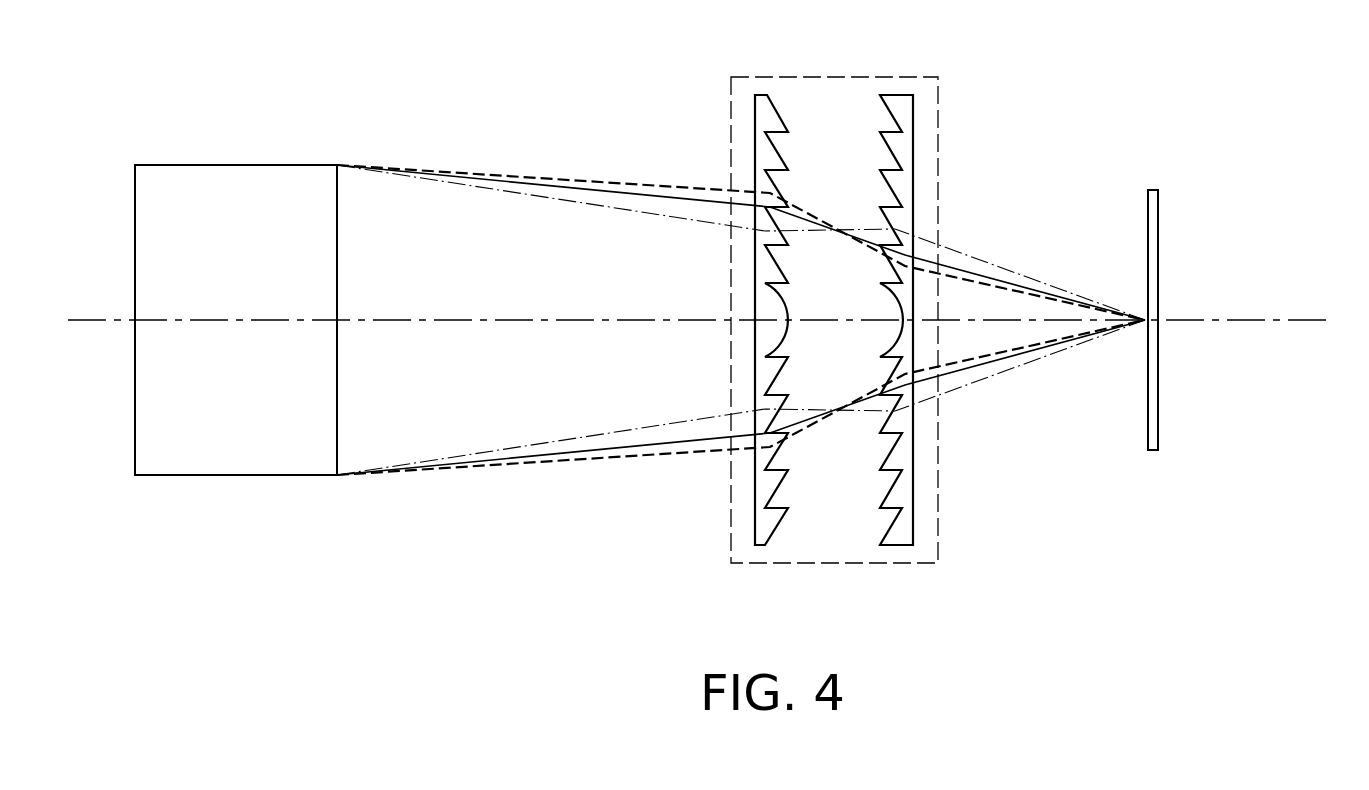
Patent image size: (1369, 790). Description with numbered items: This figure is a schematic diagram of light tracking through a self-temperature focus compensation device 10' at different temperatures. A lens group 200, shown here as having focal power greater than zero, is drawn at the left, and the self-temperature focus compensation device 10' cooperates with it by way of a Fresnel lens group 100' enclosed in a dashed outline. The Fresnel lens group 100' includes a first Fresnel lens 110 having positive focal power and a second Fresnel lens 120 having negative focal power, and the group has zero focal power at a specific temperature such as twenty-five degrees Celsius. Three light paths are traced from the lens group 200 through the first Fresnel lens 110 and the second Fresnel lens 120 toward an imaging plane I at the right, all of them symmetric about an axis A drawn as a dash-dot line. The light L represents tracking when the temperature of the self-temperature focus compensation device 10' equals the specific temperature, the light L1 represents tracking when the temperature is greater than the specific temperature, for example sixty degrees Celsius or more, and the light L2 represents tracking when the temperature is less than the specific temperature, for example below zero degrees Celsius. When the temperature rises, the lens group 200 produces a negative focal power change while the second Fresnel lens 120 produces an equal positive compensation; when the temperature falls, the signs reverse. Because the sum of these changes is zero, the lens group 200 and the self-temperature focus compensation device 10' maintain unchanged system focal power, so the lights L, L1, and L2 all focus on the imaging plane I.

The lens group 200 is at (204, 170).
The self-temperature focus compensation device 10' is at (900, 297).
The Fresnel lens group 100' is at (900, 297).
The first Fresnel lens 110 is at (762, 542).
The second Fresnel lens 120 is at (900, 542).
The imaging plane I is at (1148, 208).
The light L is at (1053, 293).
The light L1 is at (1010, 288).
The light L2 is at (970, 254).
The optical axis A is at (1302, 320).